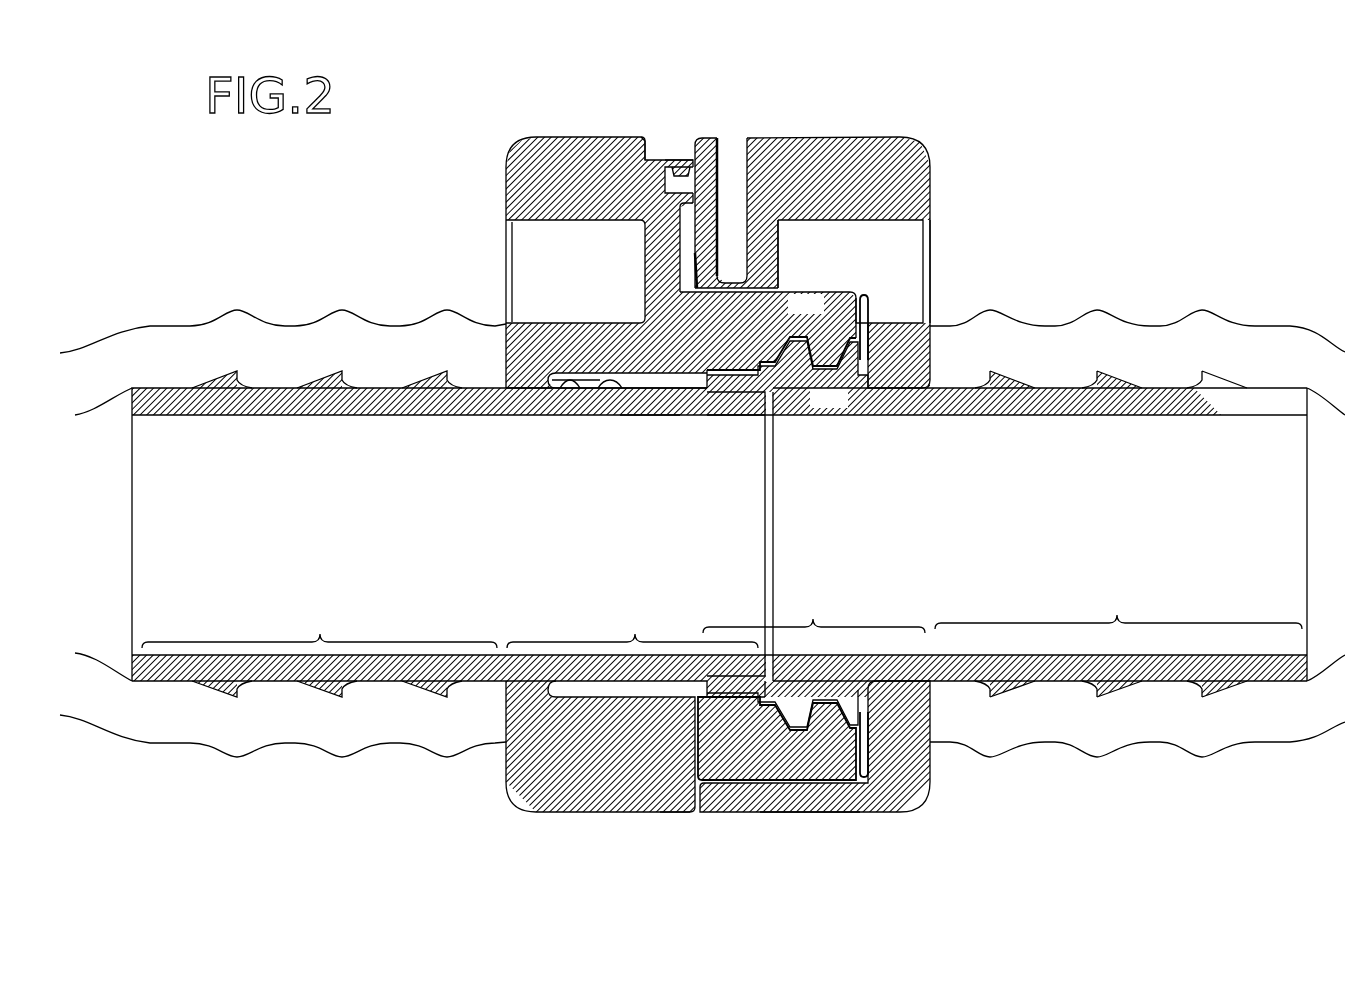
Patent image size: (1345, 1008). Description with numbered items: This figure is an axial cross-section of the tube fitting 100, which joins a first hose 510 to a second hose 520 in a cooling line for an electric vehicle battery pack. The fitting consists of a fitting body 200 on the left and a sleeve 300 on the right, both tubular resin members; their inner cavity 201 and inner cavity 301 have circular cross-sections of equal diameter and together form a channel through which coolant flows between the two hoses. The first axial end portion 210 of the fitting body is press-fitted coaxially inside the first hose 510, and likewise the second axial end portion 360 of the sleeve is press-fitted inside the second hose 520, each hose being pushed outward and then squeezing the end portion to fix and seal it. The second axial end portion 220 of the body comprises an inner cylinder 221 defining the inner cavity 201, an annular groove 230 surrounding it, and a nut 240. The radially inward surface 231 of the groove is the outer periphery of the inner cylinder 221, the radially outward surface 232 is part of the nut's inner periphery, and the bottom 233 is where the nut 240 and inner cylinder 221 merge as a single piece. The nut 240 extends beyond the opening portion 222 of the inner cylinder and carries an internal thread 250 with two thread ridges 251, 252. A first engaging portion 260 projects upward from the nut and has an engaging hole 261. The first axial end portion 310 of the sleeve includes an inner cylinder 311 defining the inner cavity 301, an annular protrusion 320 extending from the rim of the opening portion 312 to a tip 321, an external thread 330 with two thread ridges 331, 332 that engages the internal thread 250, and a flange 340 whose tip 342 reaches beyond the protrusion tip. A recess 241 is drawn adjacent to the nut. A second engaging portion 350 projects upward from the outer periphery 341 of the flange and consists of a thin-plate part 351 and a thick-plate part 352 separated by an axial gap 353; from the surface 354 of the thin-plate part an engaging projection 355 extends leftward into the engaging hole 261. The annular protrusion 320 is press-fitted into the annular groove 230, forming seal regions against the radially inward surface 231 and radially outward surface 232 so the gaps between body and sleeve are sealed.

The tube fitting 100 is at (1068, 126).
The fitting body 200 is at (493, 353).
The inner cavity 201 is at (282, 534).
The first axial end portion 210 is at (319, 626).
The second axial end portion 220 is at (632, 627).
The inner cylinder 221 is at (647, 414).
The opening portion 222 is at (757, 414).
The annular groove 230 is at (630, 383).
The radially inward surface 231 is at (600, 392).
The radially outward surface 232 is at (580, 388).
The bottom 233 is at (560, 384).
The nut 240 is at (605, 812).
The recess 241 is at (820, 290).
The internal thread 250 is at (808, 322).
The thread ridge 251 is at (697, 320).
The thread ridge 252 is at (823, 720).
The first engaging portion 260 is at (567, 137).
The engaging hole 261 is at (667, 160).
The sleeve 300 is at (947, 350).
The inner cavity 301 is at (1168, 540).
The first axial end portion 310 is at (814, 612).
The inner cylinder 311 is at (866, 406).
The opening portion 312 is at (781, 414).
The annular protrusion 320 is at (720, 398).
The tip 321 is at (698, 690).
The external thread 330 is at (787, 372).
The thread ridge 331 is at (783, 720).
The thread ridge 332 is at (863, 713).
The flange 340 is at (917, 800).
The outer periphery 341 is at (808, 812).
The tip 342 is at (690, 798).
The second engaging portion 350 is at (765, 36).
The thin-plate part 351 is at (705, 140).
The thick-plate part 352 is at (830, 137).
The axial gap 353 is at (731, 139).
The surface 354 is at (642, 137).
The engaging projection 355 is at (686, 160).
The second axial end portion 360 is at (1118, 611).
The first hose 510 is at (193, 323).
The second hose 520 is at (1230, 323).